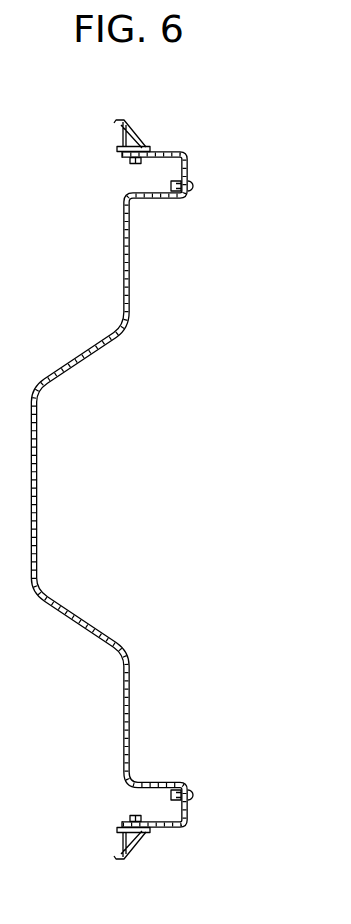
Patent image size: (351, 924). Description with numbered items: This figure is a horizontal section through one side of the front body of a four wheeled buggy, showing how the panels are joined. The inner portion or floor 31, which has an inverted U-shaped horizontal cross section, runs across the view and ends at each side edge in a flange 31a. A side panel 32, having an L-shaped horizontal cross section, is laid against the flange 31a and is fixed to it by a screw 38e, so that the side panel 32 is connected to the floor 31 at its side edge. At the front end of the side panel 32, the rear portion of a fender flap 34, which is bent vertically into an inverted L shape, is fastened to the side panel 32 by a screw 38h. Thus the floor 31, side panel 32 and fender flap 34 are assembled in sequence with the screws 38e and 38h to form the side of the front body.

The inner portion or floor 31 is at (128, 630).
The flange 31a is at (174, 182).
The side panel 32 is at (197, 156).
The fender flap 34 is at (139, 122).
The screw 38e is at (196, 188).
The screw 38h is at (131, 161).